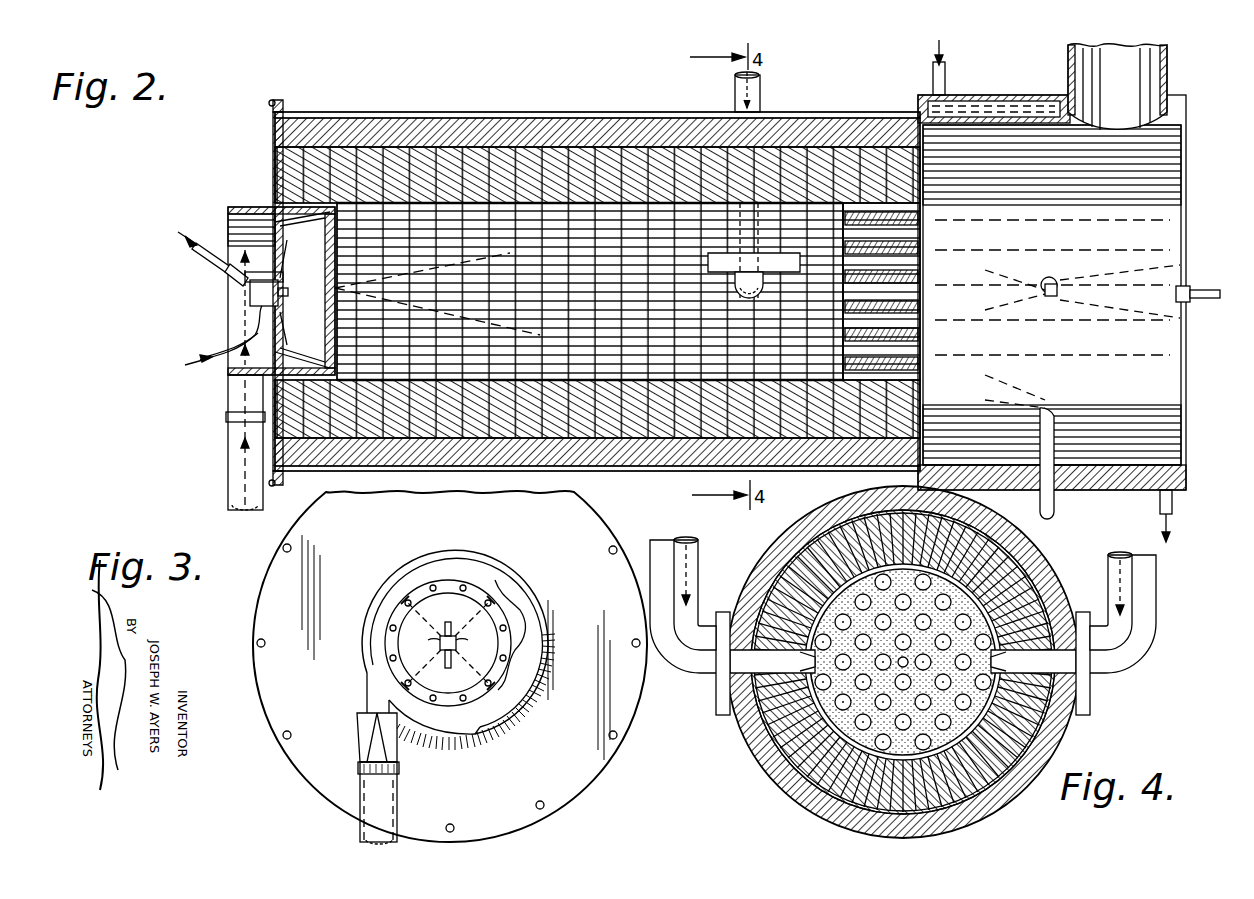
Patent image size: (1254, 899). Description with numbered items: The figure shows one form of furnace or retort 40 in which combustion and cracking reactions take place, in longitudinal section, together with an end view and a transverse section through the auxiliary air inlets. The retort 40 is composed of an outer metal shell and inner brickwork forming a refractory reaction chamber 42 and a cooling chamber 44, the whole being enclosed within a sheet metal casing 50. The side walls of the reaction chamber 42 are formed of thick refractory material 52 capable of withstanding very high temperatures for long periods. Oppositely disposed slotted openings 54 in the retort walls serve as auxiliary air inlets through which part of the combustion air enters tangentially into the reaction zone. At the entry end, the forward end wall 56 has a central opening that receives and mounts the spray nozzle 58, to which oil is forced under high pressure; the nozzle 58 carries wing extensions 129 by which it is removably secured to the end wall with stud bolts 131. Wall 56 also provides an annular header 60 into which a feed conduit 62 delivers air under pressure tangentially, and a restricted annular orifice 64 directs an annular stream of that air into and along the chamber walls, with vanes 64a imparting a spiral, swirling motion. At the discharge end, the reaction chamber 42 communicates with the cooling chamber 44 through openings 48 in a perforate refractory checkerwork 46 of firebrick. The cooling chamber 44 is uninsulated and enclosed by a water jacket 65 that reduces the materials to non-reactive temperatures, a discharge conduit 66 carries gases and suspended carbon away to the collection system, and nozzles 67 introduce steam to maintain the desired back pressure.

In FIG. 2, the retort 40 is at (513, 108).
In FIG. 2, the refractory reaction chamber 42 is at (495, 340).
In FIG. 2, the cooling chamber 44 is at (1185, 218).
In FIG. 2, the checkerwork 46 is at (915, 310).
In FIG. 2, the openings 48 is at (918, 208).
In FIG. 2, the sheet metal casing 50 is at (636, 118).
In FIG. 4, the sheet metal casing 50 is at (795, 515).
In FIG. 2, the refractory material 52 is at (363, 147).
In FIG. 4, the refractory material 52 is at (858, 518).
In FIG. 2, the slotted openings 54 is at (765, 268).
In FIG. 4, the slotted openings 54 is at (768, 598).
In FIG. 2, the forward end wall 56 is at (272, 195).
In FIG. 3, the forward end wall 56 is at (450, 666).
In FIG. 2, the spray nozzle 58 is at (252, 290).
In FIG. 3, the spray nozzle 58 is at (458, 640).
In FIG. 2, the annular header 60 is at (230, 222).
In FIG. 3, the annular header 60 is at (396, 596).
In FIG. 2, the feed conduit 62 is at (240, 420).
In FIG. 3, the feed conduit 62 is at (362, 758).
In FIG. 2, the annular orifice 64 is at (318, 207).
In FIG. 2, the vanes 64a is at (328, 262).
In FIG. 2, the water jacket 65 is at (985, 105).
In FIG. 2, the discharge conduit 66 is at (1170, 78).
In FIG. 2, the nozzles 67 is at (1055, 288).
In FIG. 3, the wing extensions 129 is at (453, 655).
In FIG. 3, the stud bolts 131 is at (462, 640).